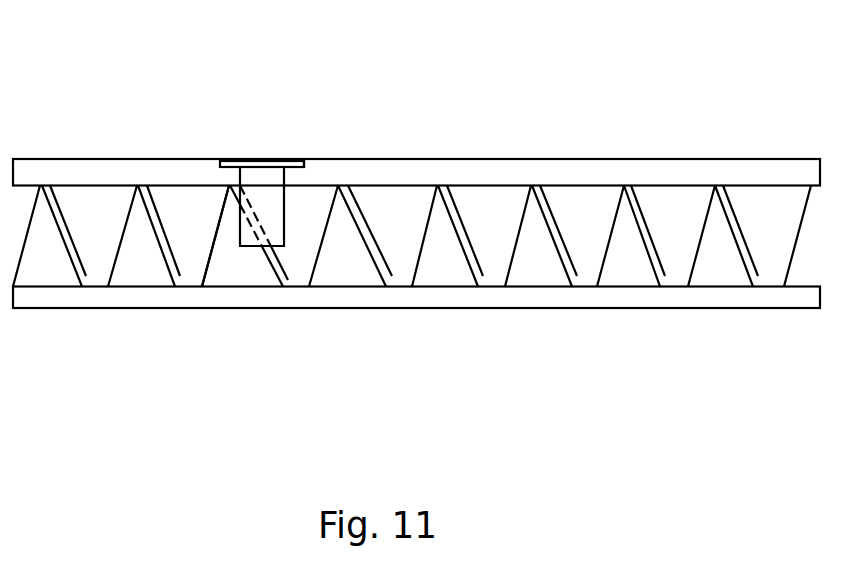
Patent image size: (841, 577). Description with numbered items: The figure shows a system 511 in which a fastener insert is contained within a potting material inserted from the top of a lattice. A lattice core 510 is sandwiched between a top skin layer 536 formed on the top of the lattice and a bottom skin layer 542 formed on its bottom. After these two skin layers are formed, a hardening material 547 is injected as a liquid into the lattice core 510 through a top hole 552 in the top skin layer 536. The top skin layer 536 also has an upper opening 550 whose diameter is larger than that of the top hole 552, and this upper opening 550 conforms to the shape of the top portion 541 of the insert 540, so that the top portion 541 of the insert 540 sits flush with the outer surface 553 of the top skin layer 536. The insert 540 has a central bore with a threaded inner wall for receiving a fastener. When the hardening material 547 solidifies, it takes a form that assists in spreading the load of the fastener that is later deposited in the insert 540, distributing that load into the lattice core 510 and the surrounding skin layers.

The lattice core 510 is at (426, 171).
The system 511 is at (122, 127).
The top skin layer 536 is at (565, 170).
The insert 540 is at (257, 160).
The top portion 541 is at (232, 163).
The bottom skin layer 542 is at (423, 297).
The hardening material 547 is at (233, 273).
The upper opening 550 is at (303, 160).
The top hole 552 is at (308, 282).
The outer surface 553 is at (661, 159).